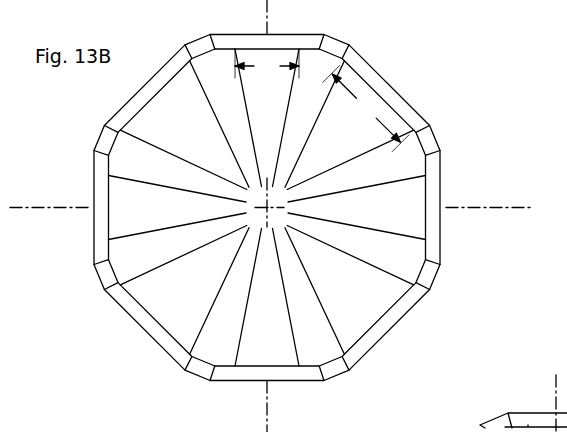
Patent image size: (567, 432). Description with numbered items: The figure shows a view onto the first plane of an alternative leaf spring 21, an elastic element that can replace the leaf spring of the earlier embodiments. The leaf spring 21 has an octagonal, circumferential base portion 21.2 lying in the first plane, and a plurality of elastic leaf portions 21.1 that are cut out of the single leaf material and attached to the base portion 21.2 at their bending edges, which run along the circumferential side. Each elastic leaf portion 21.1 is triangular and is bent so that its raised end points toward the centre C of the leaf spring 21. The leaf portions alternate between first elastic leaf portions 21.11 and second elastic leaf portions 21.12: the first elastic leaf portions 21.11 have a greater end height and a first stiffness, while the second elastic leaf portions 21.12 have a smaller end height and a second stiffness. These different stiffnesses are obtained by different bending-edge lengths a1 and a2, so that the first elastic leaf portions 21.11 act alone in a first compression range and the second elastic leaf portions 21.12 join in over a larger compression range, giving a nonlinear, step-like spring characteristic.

The leaf spring 21 is at (472, 61).
The elastic leaf portion 21.1 is at (253, 353).
The base portion 21.2 is at (438, 248).
The first elastic leaf portion 21.11 is at (290, 97).
The second elastic leaf portion 21.12 is at (195, 124).
The centre C is at (268, 208).
The bending edge length of the first elastic leaf portion a1 is at (267, 64).
The bending edge length of the second elastic leaf portion a2 is at (366, 108).